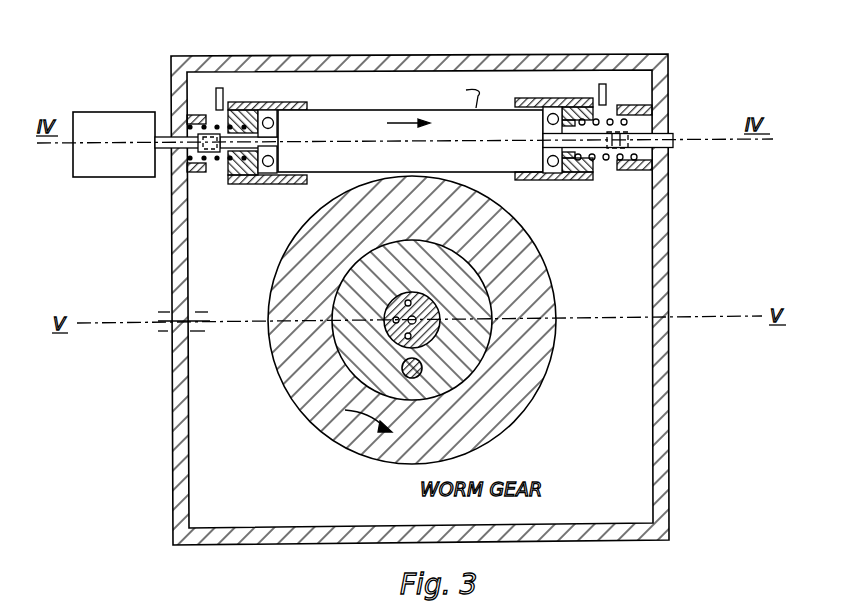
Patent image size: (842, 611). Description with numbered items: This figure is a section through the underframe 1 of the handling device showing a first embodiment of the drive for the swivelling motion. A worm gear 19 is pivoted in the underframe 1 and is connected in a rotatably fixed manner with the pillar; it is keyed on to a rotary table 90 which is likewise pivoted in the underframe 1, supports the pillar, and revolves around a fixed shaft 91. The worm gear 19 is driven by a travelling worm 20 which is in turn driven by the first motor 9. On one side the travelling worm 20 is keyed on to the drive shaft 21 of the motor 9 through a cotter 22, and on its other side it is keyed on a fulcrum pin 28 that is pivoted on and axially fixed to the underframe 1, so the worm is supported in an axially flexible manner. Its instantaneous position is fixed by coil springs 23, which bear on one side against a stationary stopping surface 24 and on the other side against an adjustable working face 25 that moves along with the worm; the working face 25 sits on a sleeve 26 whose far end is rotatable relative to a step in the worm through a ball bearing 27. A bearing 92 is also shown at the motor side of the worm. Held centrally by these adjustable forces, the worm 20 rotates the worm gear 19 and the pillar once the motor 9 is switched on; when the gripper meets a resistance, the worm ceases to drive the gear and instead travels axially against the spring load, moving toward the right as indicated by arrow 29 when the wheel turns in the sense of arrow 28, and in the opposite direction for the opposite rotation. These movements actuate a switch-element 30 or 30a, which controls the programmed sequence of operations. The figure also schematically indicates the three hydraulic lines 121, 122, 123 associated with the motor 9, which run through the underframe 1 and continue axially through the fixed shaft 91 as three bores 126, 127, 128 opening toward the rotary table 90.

The underframe 1 is at (660, 348).
The first motor 9 is at (100, 128).
The worm gear 19 is at (313, 393).
The travelling worm 20 is at (352, 123).
The drive shaft 21 is at (160, 137).
The cotter 22 is at (208, 134).
The coil springs 23 is at (640, 121).
The stationary stopping surface 24 is at (665, 151).
The adjustable working face 25 is at (578, 112).
The sleeve 26 is at (578, 183).
The ball bearing 27 is at (593, 182).
The fulcrum pin 28 is at (618, 142).
The arrow 29 is at (424, 124).
The switch-element 30 is at (601, 84).
The switch-element 30a is at (218, 88).
The rotary table 90 is at (468, 361).
The fixed shaft 91 is at (427, 337).
The bearing 92 is at (268, 102).
The hydraulic line 121 is at (168, 311).
The hydraulic line 122 is at (166, 320).
The hydraulic line 123 is at (167, 331).
The bore 126 is at (404, 303).
The bore 127 is at (393, 318).
The bore 128 is at (405, 338).